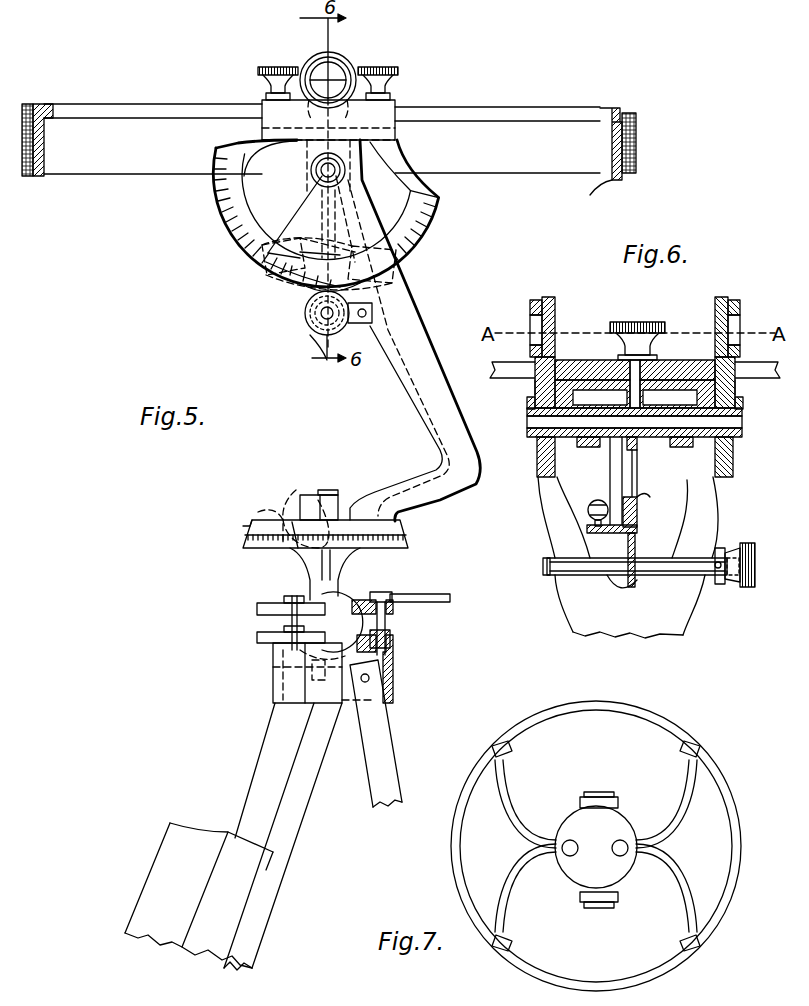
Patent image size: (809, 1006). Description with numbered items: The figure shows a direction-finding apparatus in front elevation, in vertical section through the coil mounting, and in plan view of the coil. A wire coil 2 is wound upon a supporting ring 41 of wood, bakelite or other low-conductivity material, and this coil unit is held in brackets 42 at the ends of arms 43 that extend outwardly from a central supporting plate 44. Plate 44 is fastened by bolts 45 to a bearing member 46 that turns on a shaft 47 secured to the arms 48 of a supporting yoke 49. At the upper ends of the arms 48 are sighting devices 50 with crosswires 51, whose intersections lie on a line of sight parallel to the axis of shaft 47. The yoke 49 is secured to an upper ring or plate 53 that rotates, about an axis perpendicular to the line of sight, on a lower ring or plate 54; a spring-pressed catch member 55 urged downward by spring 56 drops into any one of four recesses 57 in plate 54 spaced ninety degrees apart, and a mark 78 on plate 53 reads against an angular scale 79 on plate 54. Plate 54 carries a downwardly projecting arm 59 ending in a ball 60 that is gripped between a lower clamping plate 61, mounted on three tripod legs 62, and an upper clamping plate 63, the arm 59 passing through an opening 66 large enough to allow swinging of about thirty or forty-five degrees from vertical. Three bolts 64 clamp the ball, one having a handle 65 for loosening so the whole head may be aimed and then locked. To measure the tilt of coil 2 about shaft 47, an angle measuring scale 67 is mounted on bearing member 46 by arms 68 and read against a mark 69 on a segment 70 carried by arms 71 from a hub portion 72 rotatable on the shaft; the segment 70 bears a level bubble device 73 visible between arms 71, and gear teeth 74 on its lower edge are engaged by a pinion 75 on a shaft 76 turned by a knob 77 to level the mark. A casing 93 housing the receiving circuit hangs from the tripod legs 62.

In FIG. 5, the wire coil 2 is at (637, 150).
In FIG. 7, the wire coil 2 is at (670, 723).
In FIG. 5, the supporting ring 41 is at (634, 122).
In FIG. 7, the supporting ring 41 is at (725, 792).
In FIG. 5, the brackets 42 is at (610, 165).
In FIG. 5, the arms 43 is at (500, 120).
In FIG. 6, the arms 43 is at (493, 372).
In FIG. 7, the arms 43 is at (684, 893).
In FIG. 6, the central supporting plate 44 is at (580, 371).
In FIG. 7, the central supporting plate 44 is at (616, 827).
In FIG. 5, the bolts 45 is at (402, 68).
In FIG. 6, the bolts 45 is at (650, 322).
In FIG. 6, the bearing member 46 is at (683, 392).
In FIG. 6, the shaft 47 is at (683, 440).
In FIG. 6, the arms of supporting yoke 48 is at (733, 388).
In FIG. 5, the supporting yoke 49 is at (412, 339).
In FIG. 6, the supporting yoke 49 is at (577, 608).
In FIG. 6, the sighting devices 50 is at (736, 319).
In FIG. 5, the crosswires 51 is at (331, 76).
In FIG. 5, the ring or plate 53 is at (402, 530).
In FIG. 5, the lower ring or plate 54 is at (400, 546).
In FIG. 5, the catch member 55 is at (248, 526).
In FIG. 5, the spring 56 is at (268, 518).
In FIG. 5, the recesses 57 is at (300, 498).
In FIG. 5, the downwardly projecting arm 59 is at (332, 588).
In FIG. 5, the ball 60 is at (342, 627).
In FIG. 5, the lower clamping plate 61 is at (395, 658).
In FIG. 5, the tripod legs 62 is at (378, 770).
In FIG. 5, the upper clamping plate 63 is at (257, 609).
In FIG. 5, the bolts 64 is at (288, 618).
In FIG. 5, the handle 65 is at (432, 596).
In FIG. 5, the opening 66 is at (380, 595).
In FIG. 5, the angle measuring scale 67 is at (234, 232).
In FIG. 6, the angle measuring scale 67 is at (639, 497).
In FIG. 5, the arms 68 is at (403, 166).
In FIG. 5, the mark 69 is at (310, 290).
In FIG. 5, the segment 70 is at (300, 288).
In FIG. 6, the segment 70 is at (638, 530).
In FIG. 5, the arms 71 is at (294, 218).
In FIG. 6, the arms 71 is at (610, 481).
In FIG. 6, the hub portion 72 is at (597, 440).
In FIG. 5, the level bubble device 73 is at (262, 258).
In FIG. 6, the level bubble device 73 is at (588, 503).
In FIG. 5, the gear teeth 74 is at (270, 282).
In FIG. 5, the pinion 75 is at (312, 322).
In FIG. 6, the pinion 75 is at (637, 578).
In FIG. 5, the shaft 76 is at (317, 331).
In FIG. 6, the shaft 76 is at (577, 565).
In FIG. 5, the handle or knob 77 is at (358, 327).
In FIG. 6, the handle or knob 77 is at (744, 545).
In FIG. 5, the mark 78 is at (343, 504).
In FIG. 5, the angular scale 79 is at (297, 540).
In FIG. 5, the casing 93 is at (170, 850).